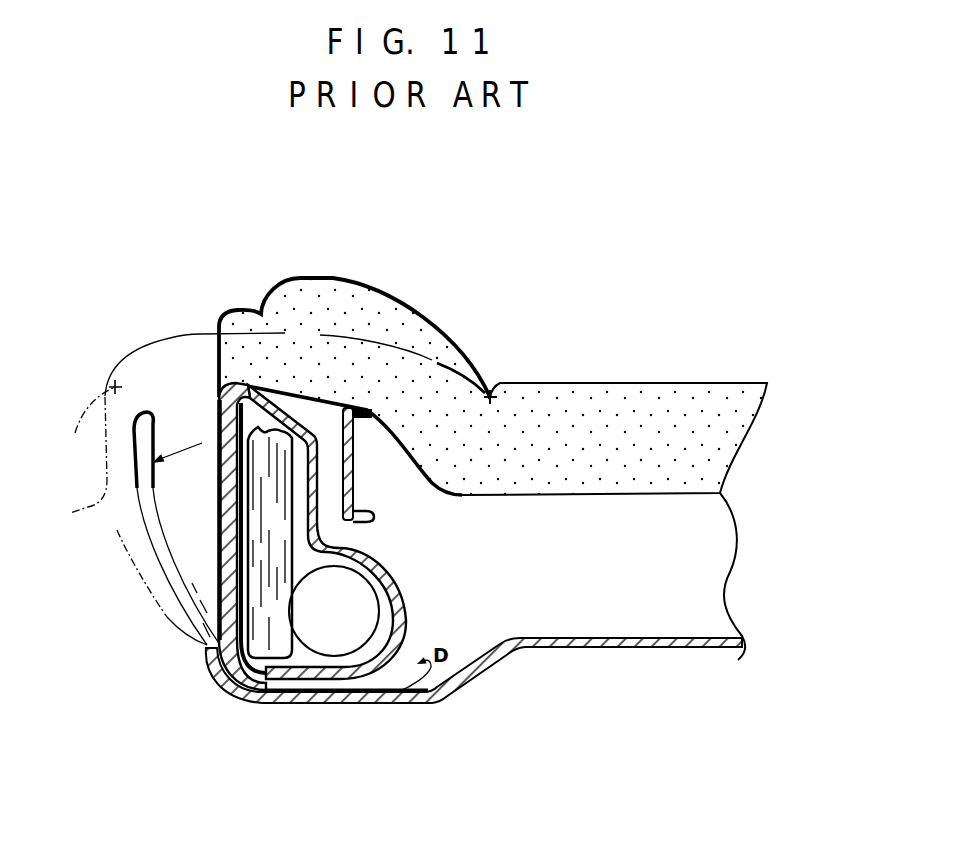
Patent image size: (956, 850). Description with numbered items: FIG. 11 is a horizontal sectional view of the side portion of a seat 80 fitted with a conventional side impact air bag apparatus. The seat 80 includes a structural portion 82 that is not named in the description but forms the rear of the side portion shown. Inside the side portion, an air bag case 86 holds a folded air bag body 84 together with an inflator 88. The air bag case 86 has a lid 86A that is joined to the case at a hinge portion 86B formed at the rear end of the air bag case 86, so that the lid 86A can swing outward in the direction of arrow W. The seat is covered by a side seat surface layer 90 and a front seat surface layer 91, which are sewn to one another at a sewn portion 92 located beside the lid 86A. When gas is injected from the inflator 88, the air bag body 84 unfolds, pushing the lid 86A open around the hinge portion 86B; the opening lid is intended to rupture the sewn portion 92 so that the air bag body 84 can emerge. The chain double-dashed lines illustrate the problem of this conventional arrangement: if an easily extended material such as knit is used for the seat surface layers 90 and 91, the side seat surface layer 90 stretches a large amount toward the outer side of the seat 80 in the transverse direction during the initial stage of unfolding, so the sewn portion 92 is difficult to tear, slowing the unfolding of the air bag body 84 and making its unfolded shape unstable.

The seat 80 is at (653, 322).
The flange surface 82 is at (575, 372).
The air bag body 84 is at (218, 417).
The air bag case 86 is at (340, 690).
The lid 86A is at (215, 555).
The hinge portion 86B is at (265, 704).
The inflator 88 is at (342, 618).
The side seat surface layer 90 is at (217, 488).
The front seat surface layer 91 is at (363, 343).
The sewn portion 92 is at (250, 306).